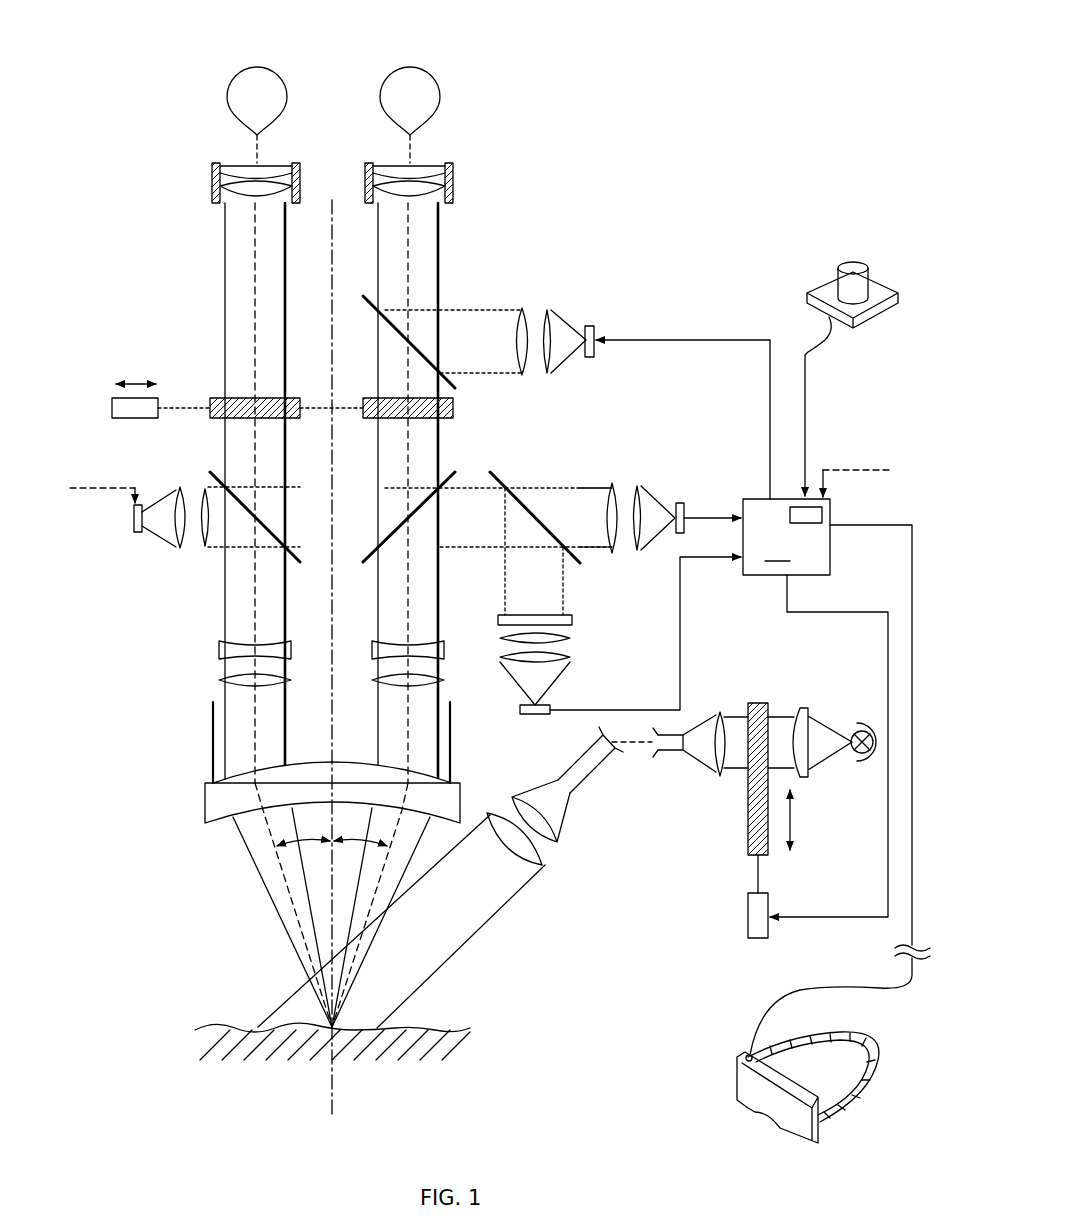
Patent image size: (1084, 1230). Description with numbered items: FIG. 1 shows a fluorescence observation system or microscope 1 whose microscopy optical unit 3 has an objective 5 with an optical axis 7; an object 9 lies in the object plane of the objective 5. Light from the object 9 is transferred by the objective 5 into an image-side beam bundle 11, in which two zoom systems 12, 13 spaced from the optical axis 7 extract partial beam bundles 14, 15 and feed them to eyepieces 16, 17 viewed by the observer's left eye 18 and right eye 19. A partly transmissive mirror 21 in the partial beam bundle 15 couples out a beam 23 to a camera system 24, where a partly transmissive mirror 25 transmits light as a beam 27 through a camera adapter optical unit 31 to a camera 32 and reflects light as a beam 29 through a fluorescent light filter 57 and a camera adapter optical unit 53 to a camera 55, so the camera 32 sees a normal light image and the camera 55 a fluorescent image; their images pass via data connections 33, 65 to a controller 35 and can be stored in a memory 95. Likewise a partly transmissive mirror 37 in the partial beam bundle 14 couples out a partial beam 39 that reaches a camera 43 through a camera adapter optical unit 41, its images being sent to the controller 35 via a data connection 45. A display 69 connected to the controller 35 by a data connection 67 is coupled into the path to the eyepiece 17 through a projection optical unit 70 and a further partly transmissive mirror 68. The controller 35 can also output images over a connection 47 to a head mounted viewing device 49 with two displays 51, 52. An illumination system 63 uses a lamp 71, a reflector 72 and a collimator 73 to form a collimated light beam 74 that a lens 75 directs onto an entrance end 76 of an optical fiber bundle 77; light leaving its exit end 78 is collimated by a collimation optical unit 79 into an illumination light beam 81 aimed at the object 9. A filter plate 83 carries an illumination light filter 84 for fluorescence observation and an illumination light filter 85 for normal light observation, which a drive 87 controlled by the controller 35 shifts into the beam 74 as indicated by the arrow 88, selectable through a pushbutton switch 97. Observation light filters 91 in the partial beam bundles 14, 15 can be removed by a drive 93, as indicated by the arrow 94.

The fluorescence observation system 1 is at (724, 142).
The microscopy optical unit 3 is at (152, 192).
The objective 5 is at (205, 800).
The optical axis 7 is at (332, 210).
The object 9 is at (213, 1022).
The image-side beam bundle 11 is at (212, 732).
The zoom system 12 is at (216, 640).
The zoom system 13 is at (369, 640).
The partial beam bundle 14 is at (225, 260).
The partial beam bundle 15 is at (440, 260).
The eyepiece 16 is at (212, 172).
The eyepiece 17 is at (453, 172).
The left eye 18 is at (254, 64).
The right eye 19 is at (408, 64).
The partly transmissive mirror 21 is at (390, 530).
The beam 23 is at (430, 550).
The camera system 24 is at (660, 424).
The partly transmissive mirror 25 is at (520, 492).
The beam path to camera 27 is at (568, 487).
The beam path to second detector 29 is at (503, 606).
The camera adapter optical unit 31 is at (650, 478).
The camera 32 is at (680, 502).
The data connection 33 is at (703, 516).
The controller 35 is at (786, 537).
The partly transmissive mirror 37 is at (272, 530).
The partial beam 39 is at (216, 556).
The camera adapter optical unit 41 is at (172, 552).
The camera 43 is at (137, 534).
The data connection 45 is at (110, 486).
The signal line to display 47 is at (905, 522).
The head mounted viewing device 49 is at (846, 1138).
The display 51 is at (740, 1086).
The display 52 is at (792, 1130).
The camera adapter optical unit 53 is at (575, 630).
The camera 55 is at (520, 713).
The filter 57 is at (573, 618).
The illumination system 63 is at (655, 854).
The data connection 65 is at (683, 620).
The data connection 67 is at (678, 338).
The partly transmissive mirror 68 is at (390, 330).
The display 69 is at (590, 325).
The projection optical unit 70 is at (560, 300).
The lamp 71 is at (866, 764).
The reflector 72 is at (863, 730).
The collimator 73 is at (806, 710).
The collimated light beam 74 is at (779, 716).
The lens 75 is at (720, 778).
The entrance end 76 is at (686, 756).
The optical fiber bundle 77 is at (660, 755).
The exit end 78 is at (562, 814).
The collimation optical unit 79 is at (548, 852).
The illumination light beam 81 is at (486, 934).
The filter plate 83 is at (758, 702).
The illumination light filter 84 is at (745, 734).
The illumination light filter 85 is at (747, 836).
The drive 87 is at (746, 920).
The arrow 88 is at (796, 826).
The observation light filter 91 is at (222, 397).
The drive 93 is at (140, 419).
The arrow 94 is at (135, 378).
The memory 95 is at (823, 513).
The pushbutton switch 97 is at (818, 285).